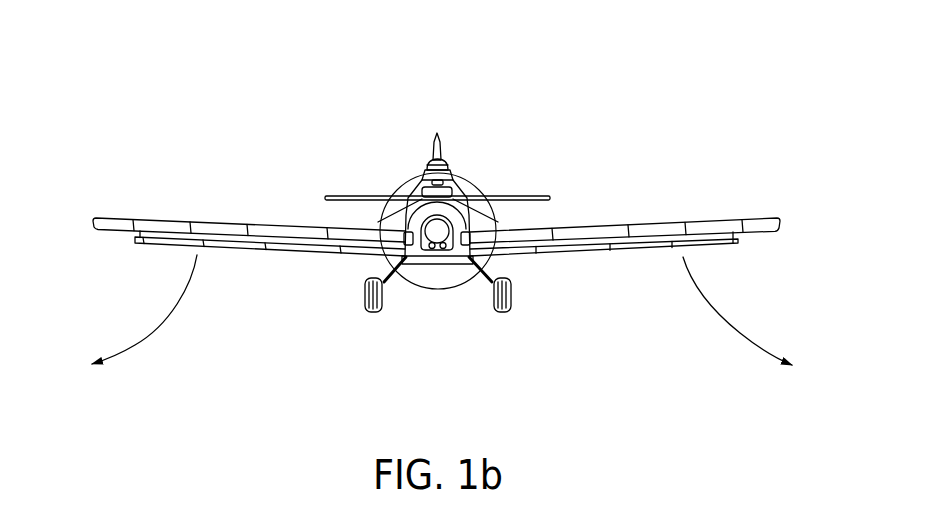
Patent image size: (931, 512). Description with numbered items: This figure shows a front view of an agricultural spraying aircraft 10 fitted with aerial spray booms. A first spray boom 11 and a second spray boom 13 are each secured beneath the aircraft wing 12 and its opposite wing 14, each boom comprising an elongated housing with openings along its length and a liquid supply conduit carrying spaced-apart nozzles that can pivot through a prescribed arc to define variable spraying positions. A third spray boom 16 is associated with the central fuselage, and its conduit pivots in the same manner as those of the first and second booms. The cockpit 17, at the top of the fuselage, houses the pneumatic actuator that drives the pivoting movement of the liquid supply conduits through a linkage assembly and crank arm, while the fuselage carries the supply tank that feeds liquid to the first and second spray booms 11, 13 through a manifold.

The agricultural aircraft 10 is at (600, 160).
The aerial spray boom 11 is at (627, 253).
The aircraft wing 12 is at (617, 227).
The second spray boom 13 is at (243, 250).
The left wing 14 is at (235, 229).
The third spray boom 16 is at (433, 265).
The cockpit 17 is at (456, 198).